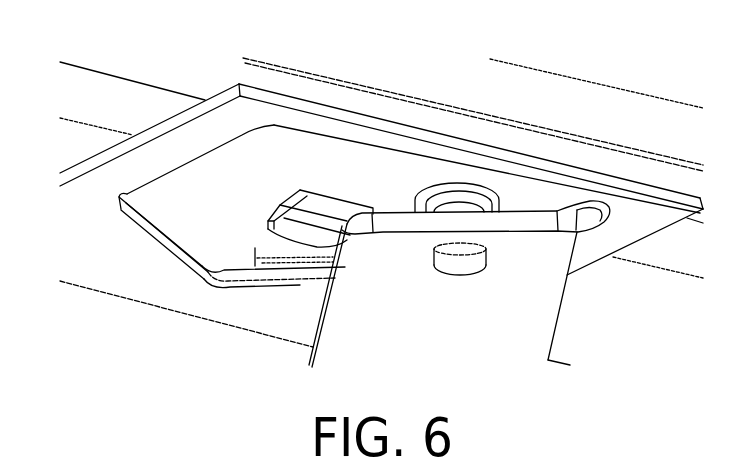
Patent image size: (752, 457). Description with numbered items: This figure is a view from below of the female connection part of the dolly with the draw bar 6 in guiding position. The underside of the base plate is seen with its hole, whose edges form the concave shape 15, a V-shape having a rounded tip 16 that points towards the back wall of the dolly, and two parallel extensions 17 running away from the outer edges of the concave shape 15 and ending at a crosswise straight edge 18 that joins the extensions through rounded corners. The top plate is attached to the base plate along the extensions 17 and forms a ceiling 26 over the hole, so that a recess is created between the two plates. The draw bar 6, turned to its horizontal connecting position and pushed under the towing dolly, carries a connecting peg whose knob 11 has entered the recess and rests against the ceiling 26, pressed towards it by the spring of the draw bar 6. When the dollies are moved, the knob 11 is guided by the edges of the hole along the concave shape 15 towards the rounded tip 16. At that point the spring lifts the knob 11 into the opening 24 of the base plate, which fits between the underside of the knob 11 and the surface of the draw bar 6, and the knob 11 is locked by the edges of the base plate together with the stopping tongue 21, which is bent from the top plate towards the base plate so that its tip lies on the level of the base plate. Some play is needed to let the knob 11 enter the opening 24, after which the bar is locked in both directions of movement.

The draw bar 6 is at (547, 326).
The knob 11 is at (466, 186).
The concave shape 15 is at (163, 237).
The rounded tip 16 is at (217, 277).
The parallel extensions 17 is at (192, 160).
The crosswise straight edge 18 is at (372, 146).
The stopping tongue 21 is at (305, 213).
The opening 24 is at (240, 252).
The ceiling 26 is at (224, 177).